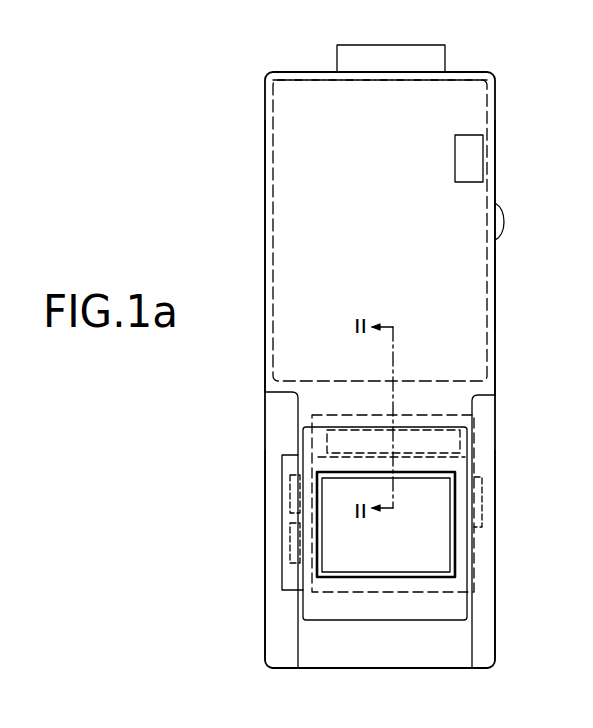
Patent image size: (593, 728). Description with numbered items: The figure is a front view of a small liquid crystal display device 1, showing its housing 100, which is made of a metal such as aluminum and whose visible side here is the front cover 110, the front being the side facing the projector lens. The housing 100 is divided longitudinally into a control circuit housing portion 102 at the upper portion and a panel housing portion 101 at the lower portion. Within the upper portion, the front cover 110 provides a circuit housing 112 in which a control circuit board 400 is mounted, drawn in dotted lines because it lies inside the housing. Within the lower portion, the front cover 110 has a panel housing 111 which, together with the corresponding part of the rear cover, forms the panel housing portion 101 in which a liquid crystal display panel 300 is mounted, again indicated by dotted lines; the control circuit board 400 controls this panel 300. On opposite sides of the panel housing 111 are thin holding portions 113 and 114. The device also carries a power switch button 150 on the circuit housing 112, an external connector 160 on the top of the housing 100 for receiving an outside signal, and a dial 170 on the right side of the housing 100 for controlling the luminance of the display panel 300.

The small liquid crystal display device 1 is at (262, 275).
The housing 100 is at (262, 88).
The panel housing portion 101 is at (499, 584).
The control circuit housing portion 102 is at (499, 288).
The front cover 110 is at (266, 383).
The panel housing 111 is at (405, 648).
The circuit housing 112 is at (325, 107).
The thin holding portion 113 is at (300, 543).
The thin holding portion 114 is at (485, 540).
The power switch button 150 is at (473, 152).
The external connector 160 is at (435, 60).
The dial 170 is at (505, 222).
The liquid crystal display panel 300 is at (473, 412).
The control circuit board 400 is at (490, 354).